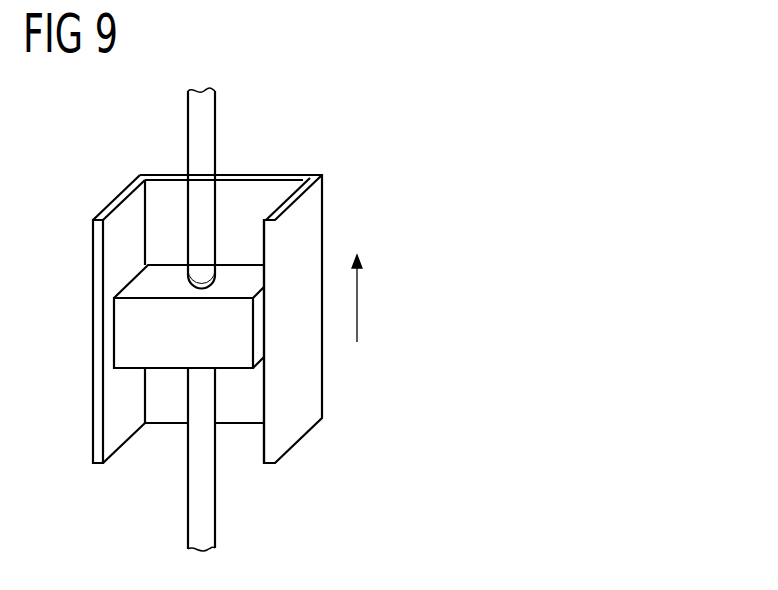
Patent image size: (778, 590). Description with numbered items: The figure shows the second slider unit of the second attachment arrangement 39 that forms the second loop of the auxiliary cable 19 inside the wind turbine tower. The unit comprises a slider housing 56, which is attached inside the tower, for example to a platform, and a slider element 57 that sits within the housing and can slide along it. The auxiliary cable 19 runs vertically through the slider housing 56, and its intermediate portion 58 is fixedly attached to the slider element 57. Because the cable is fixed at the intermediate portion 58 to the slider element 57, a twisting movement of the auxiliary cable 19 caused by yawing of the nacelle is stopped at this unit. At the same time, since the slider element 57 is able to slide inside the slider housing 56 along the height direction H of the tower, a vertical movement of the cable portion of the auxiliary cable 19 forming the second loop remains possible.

The auxiliary cable 19 is at (202, 119).
The second attachment arrangement 39 is at (352, 188).
The slider housing 56 is at (308, 392).
The slider element 57 is at (128, 343).
The intermediate portion 58 is at (197, 275).
The height direction H is at (357, 302).